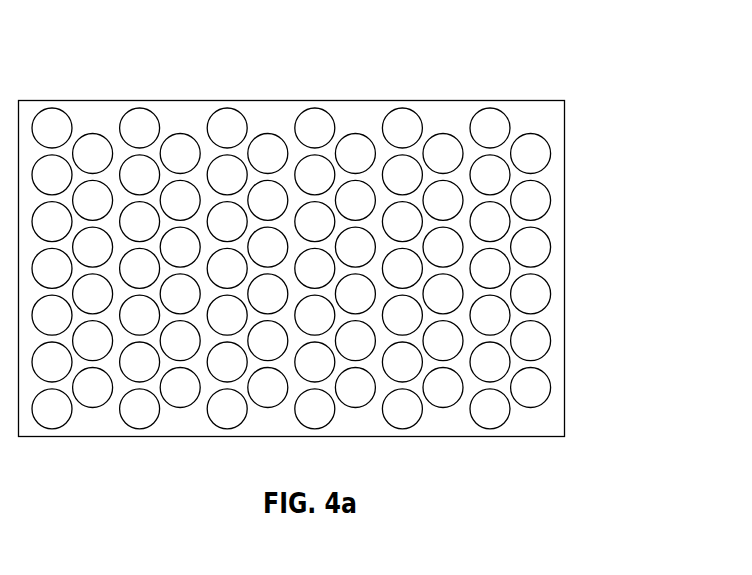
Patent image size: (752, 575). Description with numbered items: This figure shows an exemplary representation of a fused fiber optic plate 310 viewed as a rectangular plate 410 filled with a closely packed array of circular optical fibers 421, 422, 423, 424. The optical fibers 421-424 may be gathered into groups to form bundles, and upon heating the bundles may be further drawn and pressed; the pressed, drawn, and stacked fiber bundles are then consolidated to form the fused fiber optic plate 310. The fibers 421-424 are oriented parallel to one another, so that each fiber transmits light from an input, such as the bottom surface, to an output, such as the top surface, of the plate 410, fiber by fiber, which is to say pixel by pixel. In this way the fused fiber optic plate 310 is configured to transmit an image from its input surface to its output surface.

The fused fiber optic plate 310 is at (402, 68).
The plate 410 is at (100, 100).
The optical fiber 421 is at (541, 154).
The optical fiber 422 is at (541, 200).
The optical fiber 423 is at (541, 247).
The optical fiber 424 is at (541, 294).